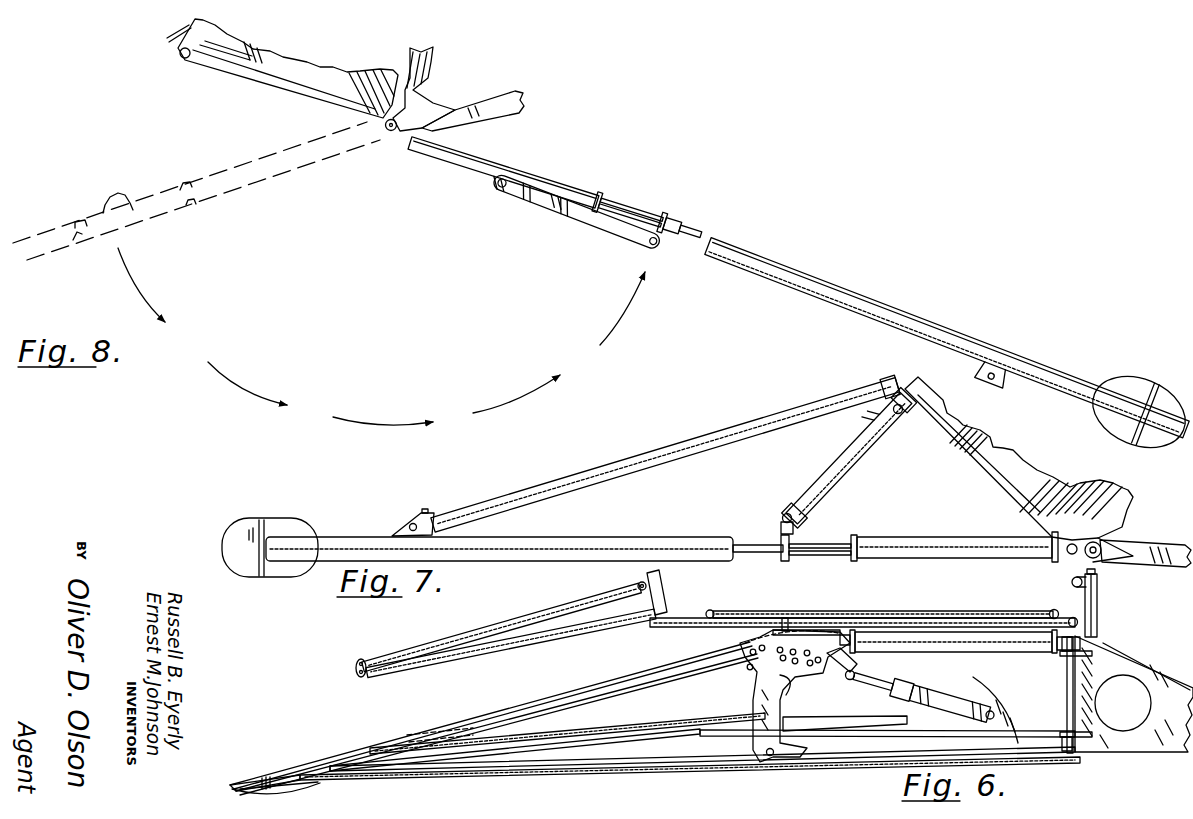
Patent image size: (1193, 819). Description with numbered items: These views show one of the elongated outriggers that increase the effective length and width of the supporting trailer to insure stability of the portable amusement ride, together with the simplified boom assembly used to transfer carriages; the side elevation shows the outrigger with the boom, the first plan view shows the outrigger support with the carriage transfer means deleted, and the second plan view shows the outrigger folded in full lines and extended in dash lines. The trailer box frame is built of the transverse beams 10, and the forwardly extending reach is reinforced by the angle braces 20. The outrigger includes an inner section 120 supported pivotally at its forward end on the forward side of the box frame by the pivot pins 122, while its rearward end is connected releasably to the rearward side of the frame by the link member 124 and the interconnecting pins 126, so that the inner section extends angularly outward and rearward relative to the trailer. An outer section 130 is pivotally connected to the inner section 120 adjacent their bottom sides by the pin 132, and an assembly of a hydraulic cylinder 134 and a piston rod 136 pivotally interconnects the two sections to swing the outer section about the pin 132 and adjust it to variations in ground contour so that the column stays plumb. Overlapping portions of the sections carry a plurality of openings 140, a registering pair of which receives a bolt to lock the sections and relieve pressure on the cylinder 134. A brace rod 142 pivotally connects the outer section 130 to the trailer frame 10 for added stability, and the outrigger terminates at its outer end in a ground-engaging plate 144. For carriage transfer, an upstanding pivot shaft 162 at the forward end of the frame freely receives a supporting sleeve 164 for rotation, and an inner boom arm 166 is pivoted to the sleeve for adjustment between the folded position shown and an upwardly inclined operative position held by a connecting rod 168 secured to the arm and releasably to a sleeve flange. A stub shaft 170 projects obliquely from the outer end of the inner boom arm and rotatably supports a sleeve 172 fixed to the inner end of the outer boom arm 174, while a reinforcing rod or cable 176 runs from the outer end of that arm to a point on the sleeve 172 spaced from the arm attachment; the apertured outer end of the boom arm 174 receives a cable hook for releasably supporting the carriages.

In FIG. 8, the transverse beams 10 is at (215, 34).
In FIG. 7, the transverse beams 10 is at (942, 408).
In FIG. 8, the angle braces 20 is at (488, 86).
In FIG. 7, the angle braces 20 is at (1147, 548).
In FIG. 6, the angle braces 20 is at (1163, 740).
In FIG. 8, the inner section 120 is at (525, 170).
In FIG. 7, the inner section 120 is at (987, 543).
In FIG. 6, the inner section 120 is at (1017, 648).
In FIG. 8, the pivot pins 122 is at (392, 133).
In FIG. 7, the pivot pins 122 is at (1070, 556).
In FIG. 6, the pivot pins 122 is at (1065, 660).
In FIG. 8, the link member 124 is at (590, 226).
In FIG. 7, the link member 124 is at (860, 455).
In FIG. 7, the interconnecting pins 126 is at (897, 415).
In FIG. 8, the outer section 130 is at (873, 305).
In FIG. 7, the outer section 130 is at (623, 543).
In FIG. 6, the outer section 130 is at (673, 673).
In FIG. 6, the pin 132 is at (772, 757).
In FIG. 6, the hydraulic cylinder 134 is at (947, 707).
In FIG. 6, the piston rod 136 is at (877, 681).
In FIG. 6, the openings 140 is at (755, 660).
In FIG. 7, the brace rod 142 is at (757, 430).
In FIG. 6, the brace rod 142 is at (740, 718).
In FIG. 8, the ground-engaging plates 144 is at (1157, 398).
In FIG. 7, the ground-engaging plates 144 is at (297, 527).
In FIG. 6, the ground-engaging plates 144 is at (303, 787).
In FIG. 6, the pivot shaft 162 is at (1098, 573).
In FIG. 6, the supporting sleeve 164 is at (1098, 587).
In FIG. 6, the inner boom arm 166 is at (885, 618).
In FIG. 6, the connecting rod 168 is at (960, 612).
In FIG. 6, the stub shaft 170 is at (636, 580).
In FIG. 6, the sleeve 172 is at (665, 583).
In FIG. 6, the outer boom arm 174 is at (597, 627).
In FIG. 6, the reinforcing rod or cable 176 is at (543, 610).